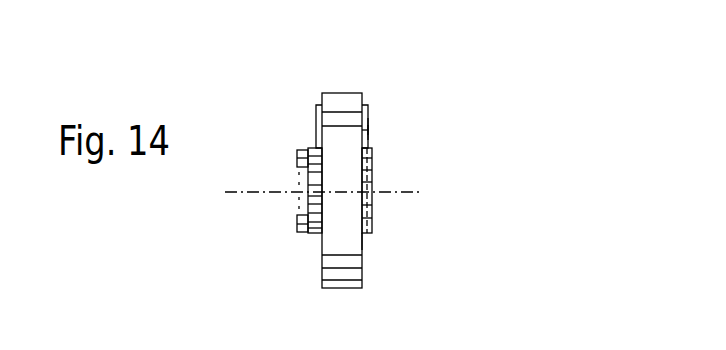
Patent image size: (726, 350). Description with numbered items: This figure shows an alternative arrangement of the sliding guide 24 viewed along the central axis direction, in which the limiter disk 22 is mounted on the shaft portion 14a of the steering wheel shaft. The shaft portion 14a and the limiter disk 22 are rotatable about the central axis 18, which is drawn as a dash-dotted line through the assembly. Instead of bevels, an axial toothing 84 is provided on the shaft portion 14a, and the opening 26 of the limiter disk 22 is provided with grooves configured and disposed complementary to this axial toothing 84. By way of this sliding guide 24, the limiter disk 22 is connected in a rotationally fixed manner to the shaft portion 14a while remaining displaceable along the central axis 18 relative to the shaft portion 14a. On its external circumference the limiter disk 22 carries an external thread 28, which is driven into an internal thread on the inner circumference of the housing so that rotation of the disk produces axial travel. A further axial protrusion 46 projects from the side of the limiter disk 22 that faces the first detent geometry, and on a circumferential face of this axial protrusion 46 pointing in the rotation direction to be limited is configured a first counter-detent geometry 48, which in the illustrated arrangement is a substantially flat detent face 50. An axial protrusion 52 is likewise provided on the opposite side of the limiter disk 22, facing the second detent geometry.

The shaft portion 14a is at (372, 193).
The central axis 18 is at (252, 192).
The limiter disk 22 is at (352, 275).
The sliding guide 24 is at (396, 135).
The opening 26 is at (378, 248).
The external thread 28 is at (347, 100).
The further axial protrusion 46 is at (367, 112).
The first counter-detent geometry 48 is at (368, 125).
The detent face 50 is at (462, 93).
The axial protrusion 52 is at (314, 107).
The axial toothing 84 is at (372, 165).